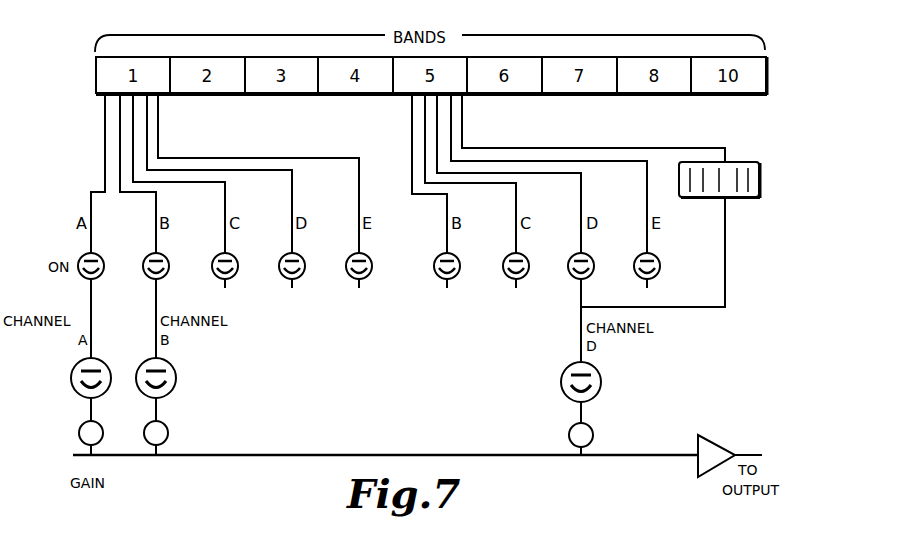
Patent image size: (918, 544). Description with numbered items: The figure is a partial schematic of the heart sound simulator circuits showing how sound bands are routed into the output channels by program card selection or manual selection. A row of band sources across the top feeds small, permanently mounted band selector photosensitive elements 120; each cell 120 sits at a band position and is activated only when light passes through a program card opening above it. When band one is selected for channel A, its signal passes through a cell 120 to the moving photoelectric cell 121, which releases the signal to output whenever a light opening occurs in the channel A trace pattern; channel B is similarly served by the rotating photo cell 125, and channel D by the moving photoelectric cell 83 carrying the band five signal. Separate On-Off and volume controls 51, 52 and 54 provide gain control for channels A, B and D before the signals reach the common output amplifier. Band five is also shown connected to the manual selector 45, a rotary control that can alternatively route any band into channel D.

The band selector photosensitive elements 120 is at (81, 256).
The moving photoelectric cell for channel A 121 is at (72, 372).
The channel B rotating photo cell 125 is at (176, 374).
The moving photoelectric cell for channel D 83 is at (601, 370).
The On-Off and volume control knob for channel A 51 is at (80, 437).
The On-Off and volume control knob for channel B 52 is at (168, 434).
The On-Off and volume control knob for channel D 54 is at (570, 440).
The manual selector 45 is at (740, 193).